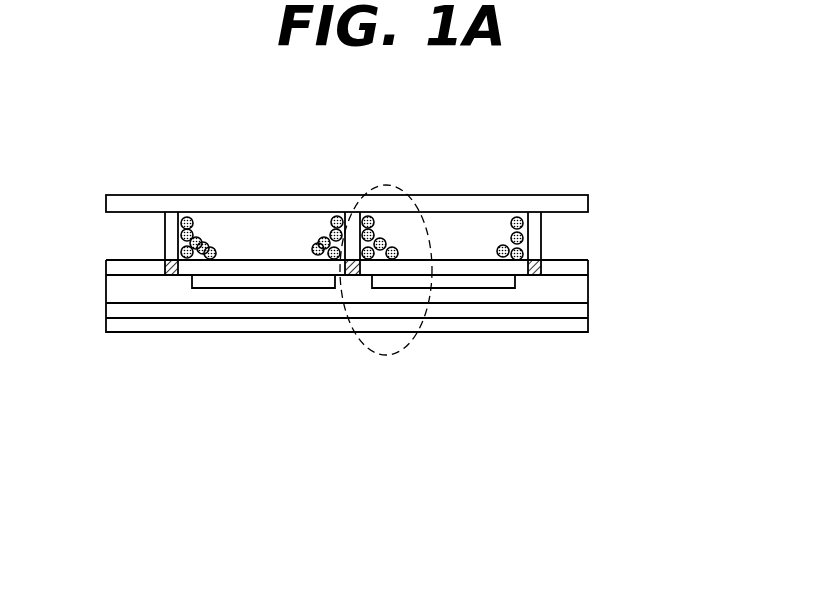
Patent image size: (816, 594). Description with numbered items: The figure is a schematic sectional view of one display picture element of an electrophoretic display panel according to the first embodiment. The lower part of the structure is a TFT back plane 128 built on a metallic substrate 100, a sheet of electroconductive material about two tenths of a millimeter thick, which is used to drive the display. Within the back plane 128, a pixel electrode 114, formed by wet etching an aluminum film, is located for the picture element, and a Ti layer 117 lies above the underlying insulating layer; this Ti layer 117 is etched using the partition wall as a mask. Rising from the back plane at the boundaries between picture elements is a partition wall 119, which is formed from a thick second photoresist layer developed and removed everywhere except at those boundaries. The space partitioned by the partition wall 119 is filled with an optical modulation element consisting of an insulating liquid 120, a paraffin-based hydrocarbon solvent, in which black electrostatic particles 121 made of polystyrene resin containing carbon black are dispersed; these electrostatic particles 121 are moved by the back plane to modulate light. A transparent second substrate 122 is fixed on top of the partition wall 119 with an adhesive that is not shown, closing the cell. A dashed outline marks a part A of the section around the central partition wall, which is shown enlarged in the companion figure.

The metallic substrate 100 is at (190, 333).
The pixel electrode 114 is at (487, 282).
The Ti layer 117 is at (543, 268).
The partition wall 119 is at (168, 248).
The insulating liquid 120 is at (286, 245).
The electrostatic particles 121 is at (207, 245).
The second substrate 122 is at (488, 206).
The TFT back plane 128 is at (400, 325).
The part A is at (387, 355).